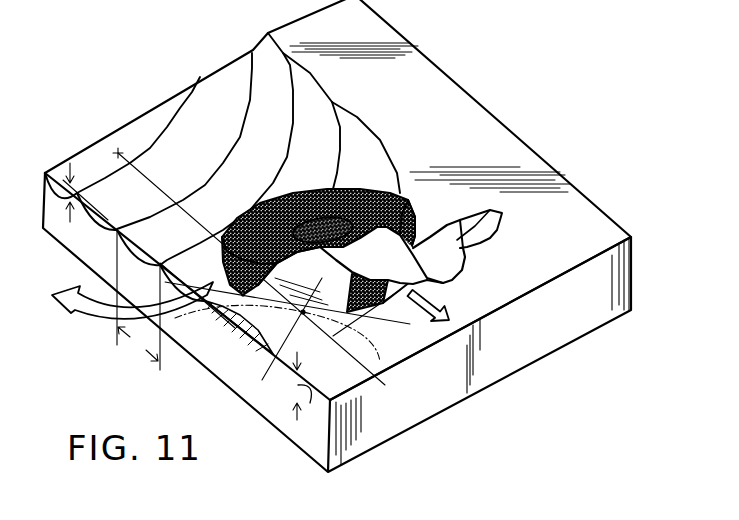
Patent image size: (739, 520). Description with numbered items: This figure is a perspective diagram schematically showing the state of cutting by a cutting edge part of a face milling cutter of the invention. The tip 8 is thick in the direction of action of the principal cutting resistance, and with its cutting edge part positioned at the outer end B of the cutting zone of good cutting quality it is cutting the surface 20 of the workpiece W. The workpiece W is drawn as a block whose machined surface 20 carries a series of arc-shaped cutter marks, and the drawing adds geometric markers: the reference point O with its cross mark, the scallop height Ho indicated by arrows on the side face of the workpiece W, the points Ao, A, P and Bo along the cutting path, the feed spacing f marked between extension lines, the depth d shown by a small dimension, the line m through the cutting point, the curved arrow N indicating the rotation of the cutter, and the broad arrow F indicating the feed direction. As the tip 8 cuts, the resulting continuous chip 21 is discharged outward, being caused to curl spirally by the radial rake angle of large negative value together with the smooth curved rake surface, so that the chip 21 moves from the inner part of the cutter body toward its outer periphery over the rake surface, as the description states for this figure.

The tip 8 is at (372, 192).
The surface 20 is at (583, 212).
The continuous chip 21 is at (452, 270).
The workpiece W is at (348, 236).
The cutter axis reference point O is at (116, 148).
The scallop height Ho is at (84, 205).
The point Ao is at (218, 276).
The cutter rotation direction N is at (122, 299).
The feed per pass f is at (138, 300).
The cutting start point A is at (235, 328).
The point P is at (287, 341).
The outer end of the cutting zone B is at (340, 330).
The point Bo is at (336, 379).
The depth of cut d is at (304, 392).
The line m is at (412, 330).
The feed direction F is at (438, 305).